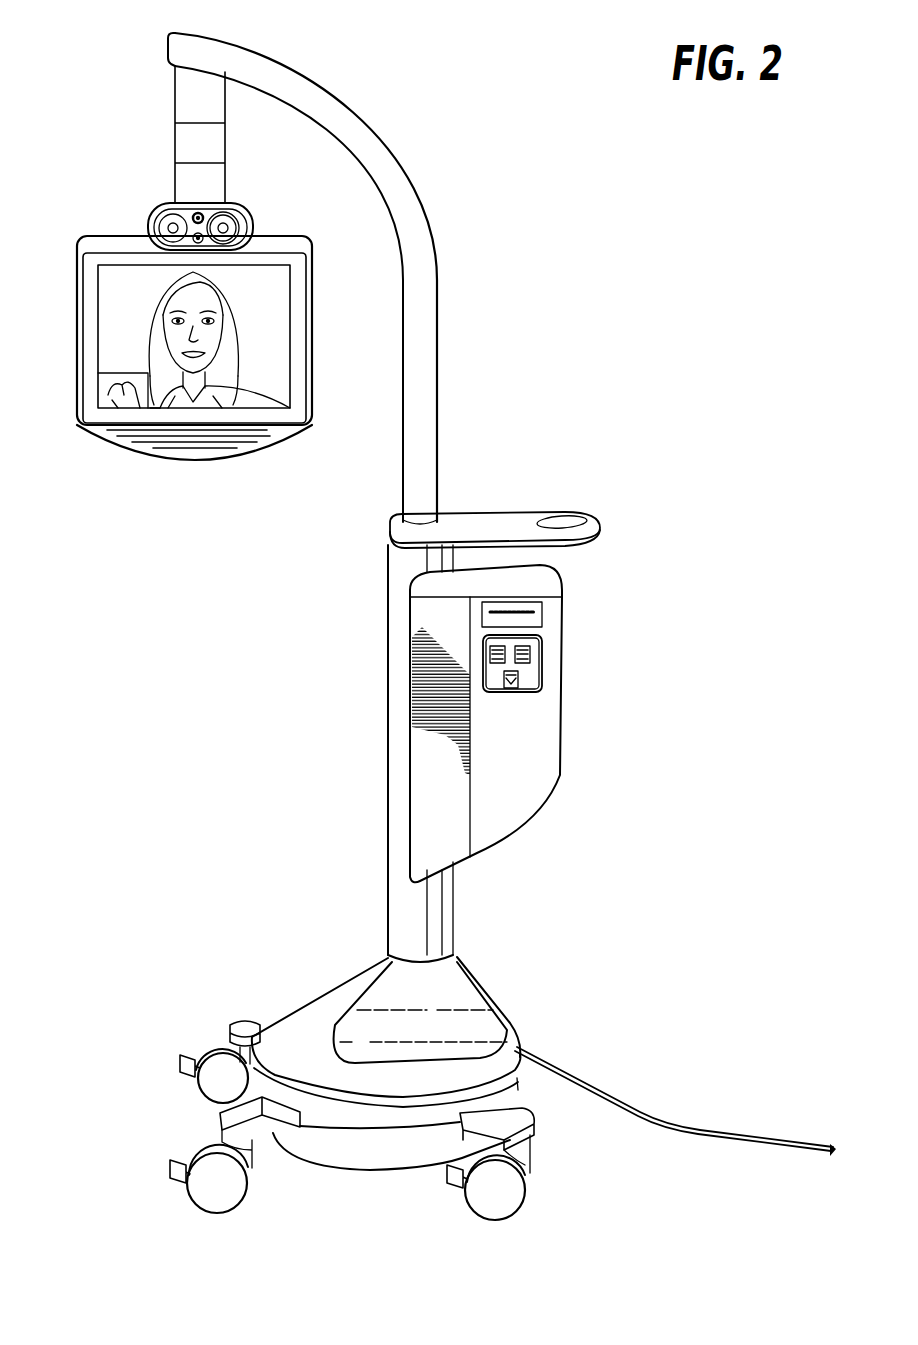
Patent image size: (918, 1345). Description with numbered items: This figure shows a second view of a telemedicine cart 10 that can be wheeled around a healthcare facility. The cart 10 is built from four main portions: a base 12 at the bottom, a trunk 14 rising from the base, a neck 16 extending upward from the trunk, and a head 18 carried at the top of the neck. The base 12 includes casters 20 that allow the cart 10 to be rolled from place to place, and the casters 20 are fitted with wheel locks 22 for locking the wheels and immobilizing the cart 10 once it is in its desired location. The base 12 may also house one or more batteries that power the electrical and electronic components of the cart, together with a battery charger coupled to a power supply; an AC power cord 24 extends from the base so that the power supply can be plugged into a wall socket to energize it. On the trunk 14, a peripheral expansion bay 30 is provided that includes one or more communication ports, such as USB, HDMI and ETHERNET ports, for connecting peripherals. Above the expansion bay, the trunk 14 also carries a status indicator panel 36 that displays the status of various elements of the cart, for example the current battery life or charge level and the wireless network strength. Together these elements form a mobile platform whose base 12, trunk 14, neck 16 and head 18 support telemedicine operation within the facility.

The telemedicine cart 10 is at (426, 85).
The base 12 is at (507, 1028).
The trunk 14 is at (388, 697).
The neck 16 is at (429, 226).
The head 18 is at (312, 318).
The casters 20 is at (196, 1087).
The wheel locks 22 is at (180, 1057).
The AC power cord 24 is at (665, 1125).
The peripheral expansion bay 30 is at (542, 663).
The status indicator panel 36 is at (542, 611).